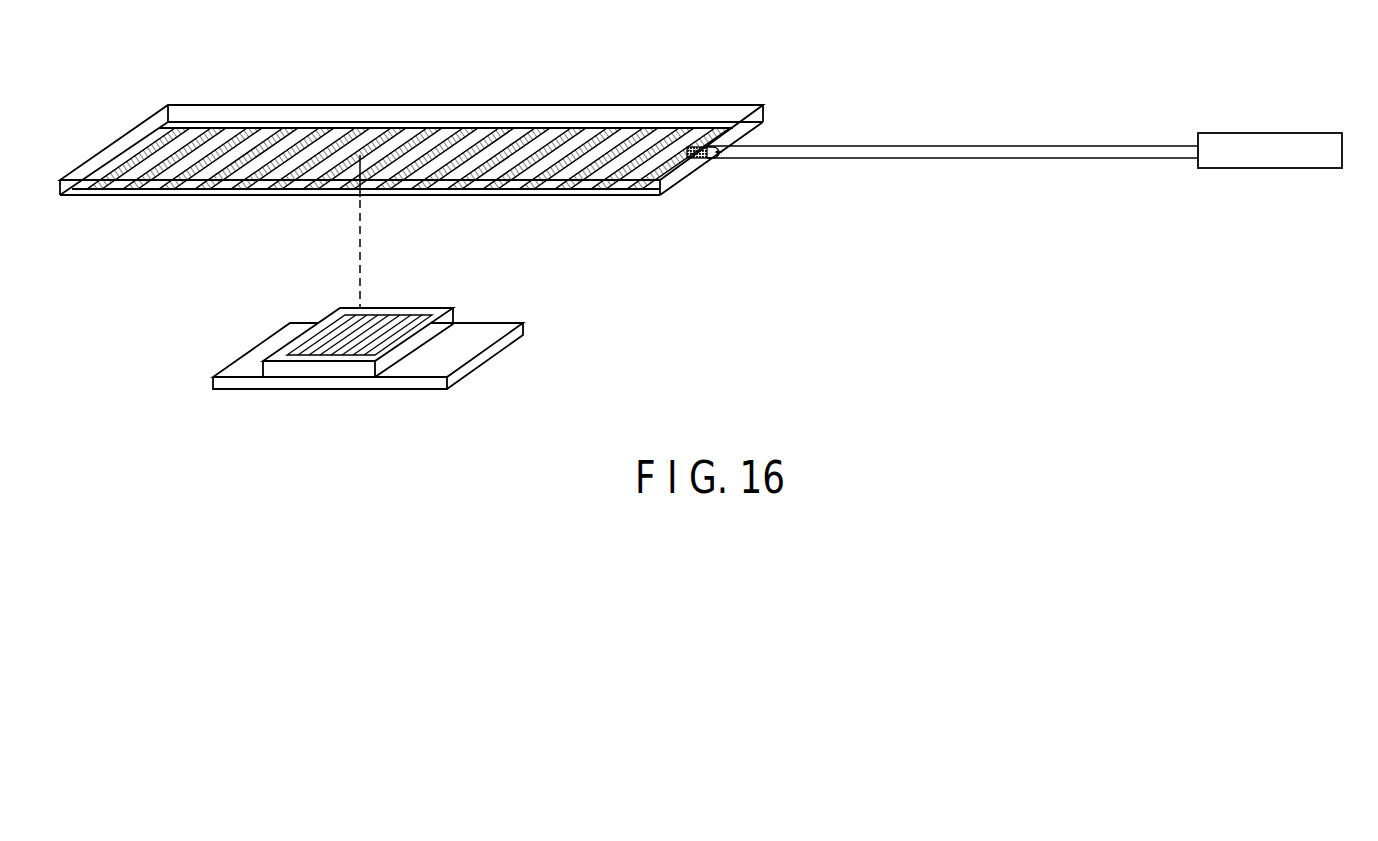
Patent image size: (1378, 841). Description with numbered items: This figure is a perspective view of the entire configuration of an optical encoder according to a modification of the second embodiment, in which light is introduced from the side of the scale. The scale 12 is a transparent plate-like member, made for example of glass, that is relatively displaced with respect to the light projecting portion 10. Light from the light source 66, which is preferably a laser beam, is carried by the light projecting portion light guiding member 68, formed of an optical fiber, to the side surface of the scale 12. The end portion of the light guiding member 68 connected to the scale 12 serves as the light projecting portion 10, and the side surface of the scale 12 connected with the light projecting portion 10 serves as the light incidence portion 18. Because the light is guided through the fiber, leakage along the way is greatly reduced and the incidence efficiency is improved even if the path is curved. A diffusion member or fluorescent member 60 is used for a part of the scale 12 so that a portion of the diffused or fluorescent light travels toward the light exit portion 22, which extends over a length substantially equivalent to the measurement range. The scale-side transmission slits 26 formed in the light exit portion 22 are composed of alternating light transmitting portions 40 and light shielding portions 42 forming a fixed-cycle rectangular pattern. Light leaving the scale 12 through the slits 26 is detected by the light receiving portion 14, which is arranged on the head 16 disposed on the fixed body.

The light projecting portion 10 is at (718, 153).
The scale 12 is at (768, 110).
The light receiving portion 14 is at (300, 332).
The head 16 is at (477, 363).
The light incidence portion 18 is at (713, 160).
The light exit portion 22 is at (667, 190).
The scale-side transmission slits 26 is at (585, 168).
The light transmitting portions 40 is at (535, 135).
The light shielding portions 42 is at (548, 134).
The diffusion member or fluorescent member 60 is at (700, 160).
The light source 66 is at (1255, 132).
The light projecting portion light guiding member 68 is at (975, 160).